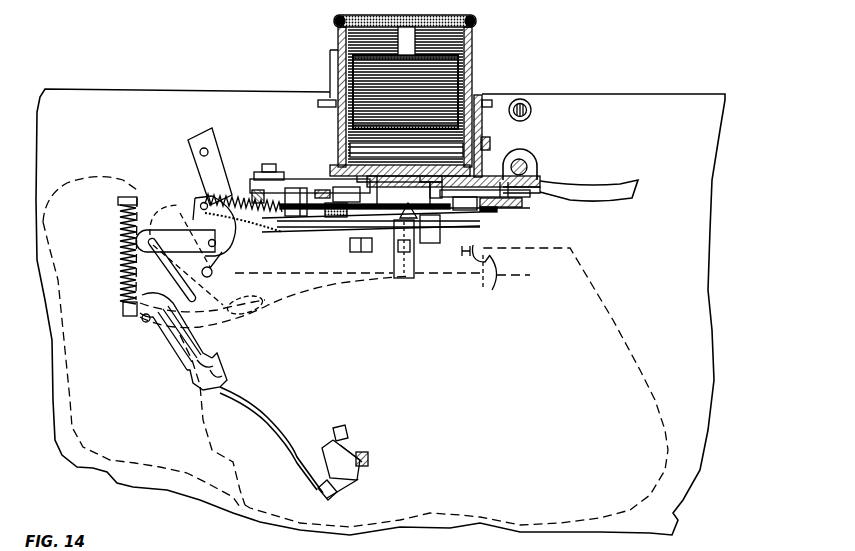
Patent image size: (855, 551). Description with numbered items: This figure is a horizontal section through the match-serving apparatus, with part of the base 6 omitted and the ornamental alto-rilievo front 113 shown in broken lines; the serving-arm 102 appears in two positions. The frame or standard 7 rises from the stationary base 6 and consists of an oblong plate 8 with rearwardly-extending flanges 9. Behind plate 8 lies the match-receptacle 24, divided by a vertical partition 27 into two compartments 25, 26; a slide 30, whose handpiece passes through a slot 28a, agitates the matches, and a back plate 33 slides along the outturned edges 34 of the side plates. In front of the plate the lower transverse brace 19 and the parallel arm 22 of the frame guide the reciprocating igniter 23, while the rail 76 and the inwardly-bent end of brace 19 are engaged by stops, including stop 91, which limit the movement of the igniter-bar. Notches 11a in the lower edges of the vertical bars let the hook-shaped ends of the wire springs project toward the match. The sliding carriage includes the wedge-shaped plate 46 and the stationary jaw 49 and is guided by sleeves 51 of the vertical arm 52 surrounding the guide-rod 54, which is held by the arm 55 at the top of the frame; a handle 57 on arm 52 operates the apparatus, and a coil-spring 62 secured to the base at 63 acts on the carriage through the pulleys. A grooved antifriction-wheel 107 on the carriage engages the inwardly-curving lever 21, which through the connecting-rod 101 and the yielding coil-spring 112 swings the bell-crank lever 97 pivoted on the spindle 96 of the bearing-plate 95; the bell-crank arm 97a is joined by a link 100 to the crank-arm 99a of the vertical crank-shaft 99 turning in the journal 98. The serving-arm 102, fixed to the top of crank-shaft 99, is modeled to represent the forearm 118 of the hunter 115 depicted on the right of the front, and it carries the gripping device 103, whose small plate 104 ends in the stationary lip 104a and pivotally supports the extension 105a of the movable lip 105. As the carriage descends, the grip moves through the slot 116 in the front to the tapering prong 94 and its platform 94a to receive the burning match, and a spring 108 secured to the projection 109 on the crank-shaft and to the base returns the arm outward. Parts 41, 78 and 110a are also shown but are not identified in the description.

The base 6 is at (380, 312).
The frame or standard 7 is at (385, 97).
The vertical oblong plate 8 is at (403, 194).
The flanges 9 is at (402, 108).
The lower transverse brace 19 is at (322, 222).
The lever 21 is at (520, 200).
The arm 22 is at (300, 182).
The igniter 23 is at (332, 210).
The match-receptacle 24 is at (403, 38).
The compartment 25 is at (406, 147).
The compartment 26 is at (418, 41).
The partition 27 is at (417, 107).
The slot 28a is at (352, 57).
The slide 30 is at (443, 63).
The back plate 33 is at (405, 13).
The outturned edges 34 is at (336, 23).
The support post 41 is at (335, 142).
The wedge-shaped plate 46 is at (490, 152).
The stationary jaw 49 is at (422, 194).
The sleeves 51 is at (541, 164).
The vertical arm 52 is at (530, 192).
The guide-rod 54 is at (535, 160).
The arm 55 is at (597, 547).
The handle 57 is at (605, 195).
The coil-spring 62 is at (535, 111).
The anchorage 63 is at (527, 100).
The rail 76 is at (330, 173).
The contact spring 78 is at (475, 215).
The stop 91 is at (305, 218).
The prong 94 is at (402, 207).
The platform 94a is at (415, 273).
The bearing-plate 95 is at (198, 165).
The spindle 96 is at (220, 248).
The bell-crank lever 97 is at (214, 226).
The bell-crank arm 97a is at (175, 240).
The journal 98 is at (153, 332).
The crank-shaft 99 is at (143, 320).
The crank-arm 99a is at (220, 313).
The link 100 is at (169, 269).
The connecting-rod 101 is at (452, 215).
The serving-arm 102 is at (268, 412).
The gripping device 103 is at (345, 480).
The plate 104 is at (343, 483).
The stationary lip 104a is at (368, 458).
The movable lip 105 is at (367, 466).
The extension 105a is at (343, 450).
The antifriction-wheel 107 is at (492, 212).
The spring 108 is at (121, 235).
The projection 109 is at (125, 308).
The spring hook 110a is at (114, 193).
The coil-spring 112 is at (238, 190).
The alto-rilievo front 113 is at (257, 505).
The human figure 115 is at (123, 440).
The aperture or slot 116 is at (493, 290).
The forearm 118 is at (170, 353).
The notches 11a is at (406, 254).